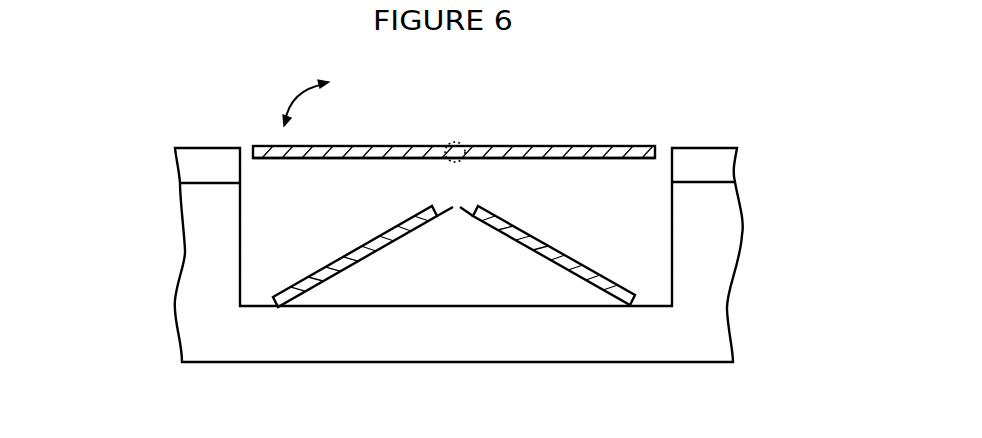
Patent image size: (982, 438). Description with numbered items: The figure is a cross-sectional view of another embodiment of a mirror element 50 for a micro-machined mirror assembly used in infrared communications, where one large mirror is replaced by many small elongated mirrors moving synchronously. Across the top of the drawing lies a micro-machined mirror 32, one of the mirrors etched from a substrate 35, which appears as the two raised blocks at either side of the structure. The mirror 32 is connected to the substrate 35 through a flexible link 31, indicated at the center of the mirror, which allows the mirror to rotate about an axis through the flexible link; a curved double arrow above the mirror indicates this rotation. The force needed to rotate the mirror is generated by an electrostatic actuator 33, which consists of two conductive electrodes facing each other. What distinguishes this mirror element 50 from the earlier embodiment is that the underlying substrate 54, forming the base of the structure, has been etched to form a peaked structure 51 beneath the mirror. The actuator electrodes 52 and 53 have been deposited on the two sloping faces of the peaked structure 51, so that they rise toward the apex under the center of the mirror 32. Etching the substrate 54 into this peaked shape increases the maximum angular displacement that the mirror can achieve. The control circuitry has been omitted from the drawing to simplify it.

The mirror element 50 is at (125, 91).
The flexible link 31 is at (447, 140).
The micro-machined mirror 32 is at (338, 152).
The electrostatic actuator 33 is at (577, 177).
The substrate 35 is at (181, 175).
The peaked structure 51 is at (457, 208).
The actuator electrode 52 is at (325, 268).
The actuator electrode 53 is at (565, 258).
The underlying substrate 54 is at (197, 287).